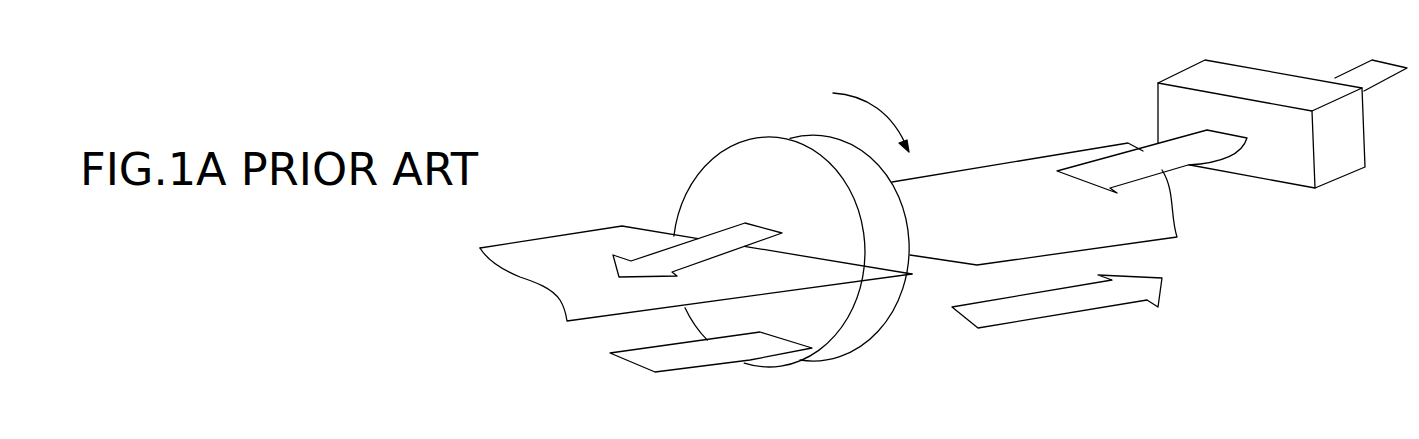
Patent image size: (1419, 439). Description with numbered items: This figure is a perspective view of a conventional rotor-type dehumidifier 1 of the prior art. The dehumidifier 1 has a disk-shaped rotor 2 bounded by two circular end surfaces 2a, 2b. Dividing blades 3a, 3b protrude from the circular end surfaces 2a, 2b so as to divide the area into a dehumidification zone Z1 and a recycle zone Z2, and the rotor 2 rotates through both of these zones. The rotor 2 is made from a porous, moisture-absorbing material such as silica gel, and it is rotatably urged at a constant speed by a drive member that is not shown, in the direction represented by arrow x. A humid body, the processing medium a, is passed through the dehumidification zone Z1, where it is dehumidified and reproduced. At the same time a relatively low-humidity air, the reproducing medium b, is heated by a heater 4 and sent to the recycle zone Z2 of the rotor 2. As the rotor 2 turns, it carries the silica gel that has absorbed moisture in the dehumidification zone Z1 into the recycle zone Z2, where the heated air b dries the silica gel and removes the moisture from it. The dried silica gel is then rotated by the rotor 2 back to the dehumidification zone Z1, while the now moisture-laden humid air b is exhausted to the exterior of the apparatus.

The conventional rotor-type dehumidifier 1 is at (480, 62).
The disk-shaped rotor 2 is at (787, 137).
The circular end surface 2a is at (712, 177).
The circular end surface 2b is at (902, 302).
The dividing blade 3a is at (585, 248).
The dividing blade 3b is at (997, 183).
The heater 4 is at (1280, 90).
The processing medium a is at (706, 360).
The reproducing medium (air) b is at (1371, 58).
The arrow X (rotation direction) x is at (871, 107).
The dehumidification zone Z1 is at (811, 326).
The recycle zone Z2 is at (795, 188).